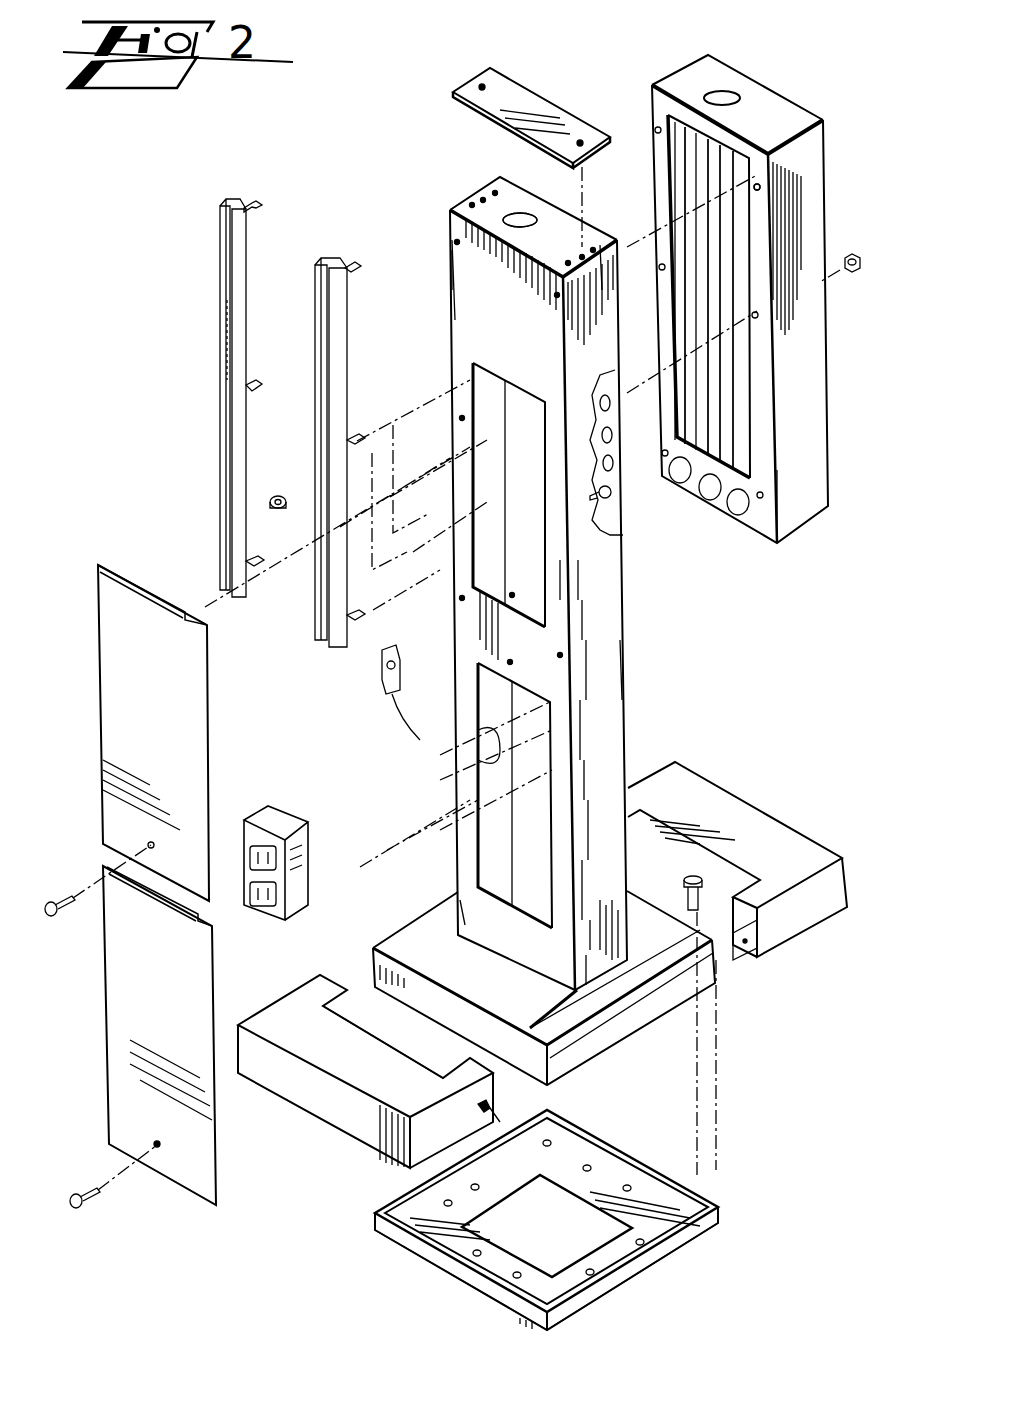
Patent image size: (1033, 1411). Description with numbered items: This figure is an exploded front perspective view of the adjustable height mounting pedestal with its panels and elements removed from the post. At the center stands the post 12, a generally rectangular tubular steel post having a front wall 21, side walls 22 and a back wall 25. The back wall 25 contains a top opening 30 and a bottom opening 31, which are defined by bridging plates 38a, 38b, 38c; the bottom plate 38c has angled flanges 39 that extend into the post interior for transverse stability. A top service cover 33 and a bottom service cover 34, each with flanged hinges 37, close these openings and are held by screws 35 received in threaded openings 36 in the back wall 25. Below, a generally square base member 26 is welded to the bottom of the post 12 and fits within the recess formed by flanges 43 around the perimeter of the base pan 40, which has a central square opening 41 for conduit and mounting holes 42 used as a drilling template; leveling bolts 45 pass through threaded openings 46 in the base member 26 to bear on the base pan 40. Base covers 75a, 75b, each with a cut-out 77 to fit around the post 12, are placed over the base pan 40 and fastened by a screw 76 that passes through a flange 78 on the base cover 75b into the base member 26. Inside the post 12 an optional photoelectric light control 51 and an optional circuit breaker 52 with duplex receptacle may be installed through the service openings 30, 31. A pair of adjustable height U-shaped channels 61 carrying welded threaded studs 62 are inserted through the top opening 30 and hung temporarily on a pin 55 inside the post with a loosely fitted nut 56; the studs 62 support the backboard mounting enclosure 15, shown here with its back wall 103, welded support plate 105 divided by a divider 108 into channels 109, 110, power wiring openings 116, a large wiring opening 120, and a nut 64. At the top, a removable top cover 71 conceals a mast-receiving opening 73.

The post 12 is at (456, 676).
The backboard mounting enclosure 15 is at (752, 306).
The front wall 21 is at (611, 236).
The side walls 22 is at (456, 348).
The back wall 25 is at (466, 258).
The base member 26 is at (650, 1015).
The top opening 30 is at (474, 376).
The bottom opening 31 is at (474, 792).
The top service cover 33 is at (110, 660).
The bottom service cover 34 is at (118, 975).
The screws 35 is at (52, 902).
The threaded openings 36 is at (601, 578).
The flanged hinges 37 is at (180, 585).
The bridging plate 38a is at (492, 300).
The bridging plate 38b is at (590, 675).
The bottom plate 38c is at (493, 917).
The angled flanges 39 is at (478, 830).
The base pan 40 is at (543, 1211).
The square opening 41 is at (550, 1250).
The mounting holes 42 is at (446, 1202).
The flanges 43 is at (672, 1240).
The leveling bolts 45 is at (686, 890).
The openings 46 is at (705, 985).
The photoelectric light control 51 is at (398, 648).
The circuit breaker 52 is at (295, 825).
The temporary channel holding pin 55 is at (616, 514).
The nut 56 is at (280, 495).
The adjustable height U-shaped channels 61 is at (221, 250).
The threaded studs 62 is at (353, 265).
The nut 64 is at (849, 272).
The top cover 71 is at (527, 88).
The mast-receiving opening 73 is at (520, 214).
The base cover 75a is at (331, 1106).
The base cover 75b is at (797, 846).
The screw 76 is at (500, 1123).
The cut-out 77 is at (340, 1028).
The flange 78 is at (750, 958).
The back wall 103 is at (787, 522).
The support plate 105 is at (742, 357).
The divider 108 is at (786, 200).
The channel 109 is at (692, 150).
The channel 110 is at (733, 167).
The power wiring openings 116 is at (742, 520).
The opening 120 is at (738, 420).